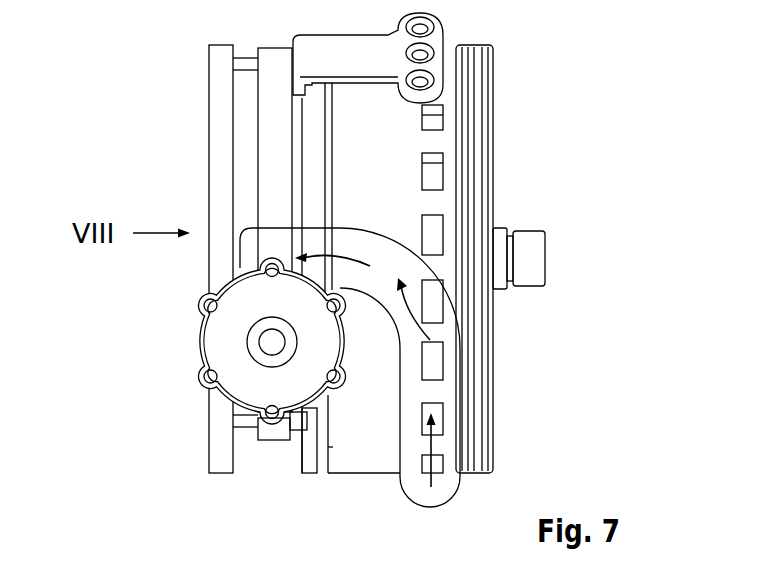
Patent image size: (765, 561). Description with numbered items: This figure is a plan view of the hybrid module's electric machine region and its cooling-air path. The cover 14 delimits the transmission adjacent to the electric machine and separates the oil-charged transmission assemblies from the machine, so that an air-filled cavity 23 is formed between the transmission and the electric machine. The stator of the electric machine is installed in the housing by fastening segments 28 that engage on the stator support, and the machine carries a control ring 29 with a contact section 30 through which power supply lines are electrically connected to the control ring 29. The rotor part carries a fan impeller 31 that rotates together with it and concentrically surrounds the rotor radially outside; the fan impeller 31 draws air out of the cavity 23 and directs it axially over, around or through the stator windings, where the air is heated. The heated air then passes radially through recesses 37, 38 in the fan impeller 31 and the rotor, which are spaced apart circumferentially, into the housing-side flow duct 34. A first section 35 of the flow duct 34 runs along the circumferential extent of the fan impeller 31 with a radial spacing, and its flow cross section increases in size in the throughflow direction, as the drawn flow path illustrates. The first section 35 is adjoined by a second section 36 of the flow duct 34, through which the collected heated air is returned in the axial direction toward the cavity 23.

The cover 14 is at (217, 155).
The air-filled cavity 23 is at (266, 457).
The fastening segments 28 is at (265, 89).
The control ring 29 is at (312, 463).
The contact section 30 is at (433, 67).
The fan impeller 31 is at (433, 143).
The housing-side flow duct 34 is at (413, 306).
The first section of the flow duct 35 is at (470, 390).
The second section of the flow duct 36 is at (350, 219).
The recesses of the fan impeller 37 is at (530, 258).
The recesses of the rotor 38 is at (503, 258).